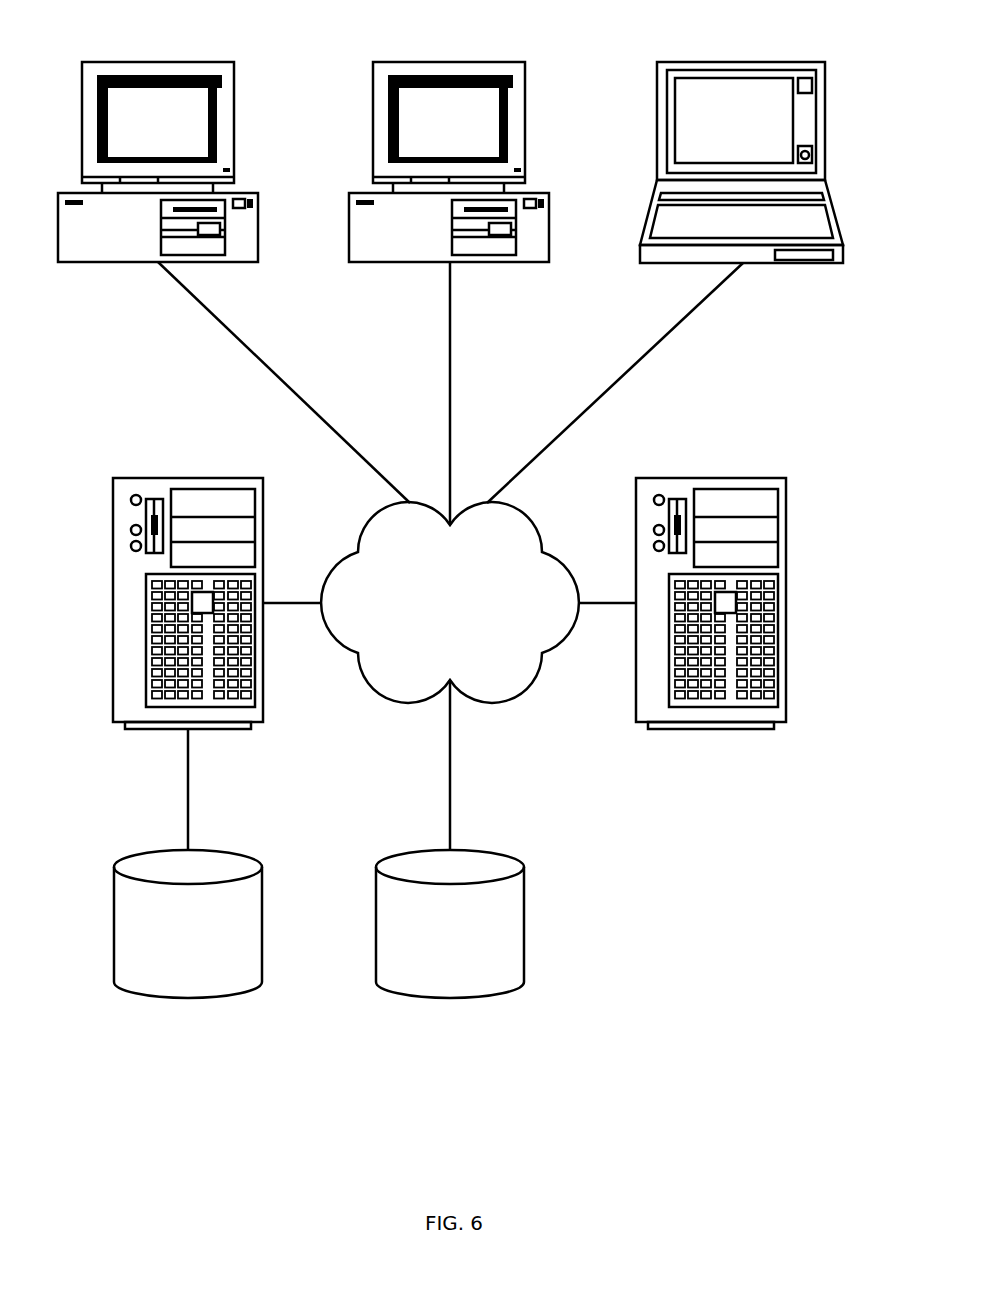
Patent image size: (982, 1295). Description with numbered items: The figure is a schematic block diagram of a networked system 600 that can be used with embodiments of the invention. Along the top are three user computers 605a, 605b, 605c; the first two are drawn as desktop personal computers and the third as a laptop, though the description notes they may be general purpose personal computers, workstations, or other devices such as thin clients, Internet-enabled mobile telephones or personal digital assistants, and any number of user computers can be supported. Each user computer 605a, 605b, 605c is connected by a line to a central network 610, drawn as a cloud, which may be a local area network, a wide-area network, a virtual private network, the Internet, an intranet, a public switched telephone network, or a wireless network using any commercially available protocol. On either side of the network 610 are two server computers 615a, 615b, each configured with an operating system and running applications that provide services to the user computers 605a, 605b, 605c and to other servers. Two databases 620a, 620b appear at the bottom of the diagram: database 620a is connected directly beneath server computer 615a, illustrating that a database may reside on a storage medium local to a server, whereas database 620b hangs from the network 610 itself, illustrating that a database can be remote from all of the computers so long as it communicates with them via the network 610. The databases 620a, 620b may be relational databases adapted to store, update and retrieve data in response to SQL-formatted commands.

The system 600 is at (699, 1053).
The user computer 605a is at (258, 212).
The user computer 605b is at (349, 212).
The user computer 605c is at (657, 163).
The network 610 is at (487, 703).
The server computer 615a is at (112, 603).
The server computer 615b is at (787, 603).
The database 620a is at (188, 998).
The database 620b is at (450, 998).